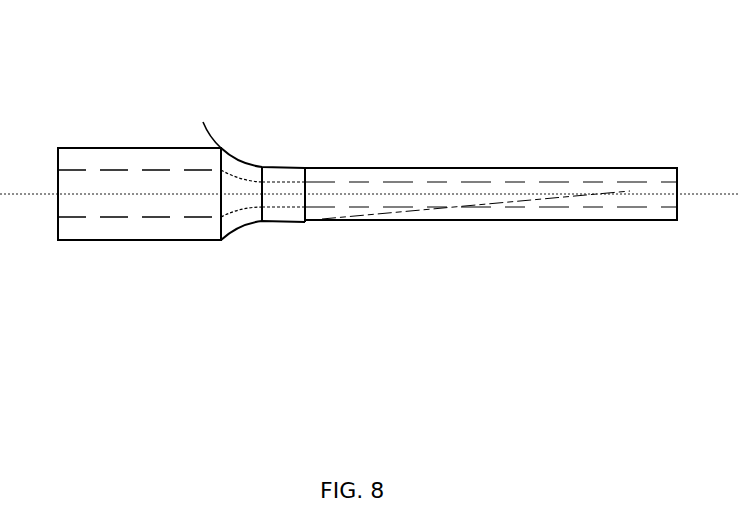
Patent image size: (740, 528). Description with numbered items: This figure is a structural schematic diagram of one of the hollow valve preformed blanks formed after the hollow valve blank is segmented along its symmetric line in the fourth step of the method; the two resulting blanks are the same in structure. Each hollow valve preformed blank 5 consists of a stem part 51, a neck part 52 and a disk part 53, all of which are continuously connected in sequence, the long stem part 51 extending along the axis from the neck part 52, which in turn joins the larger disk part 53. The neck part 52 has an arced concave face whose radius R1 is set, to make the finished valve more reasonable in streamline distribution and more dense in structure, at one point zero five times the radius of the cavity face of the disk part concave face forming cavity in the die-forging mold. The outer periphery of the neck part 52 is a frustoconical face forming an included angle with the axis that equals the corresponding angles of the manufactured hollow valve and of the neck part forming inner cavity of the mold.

The hollow valve preformed blank 5 is at (317, 362).
The stem part 51 is at (593, 222).
The neck part 52 is at (262, 225).
The disk part 53 is at (127, 242).
The radius of the arced concave face of the neck part R1 is at (240, 155).